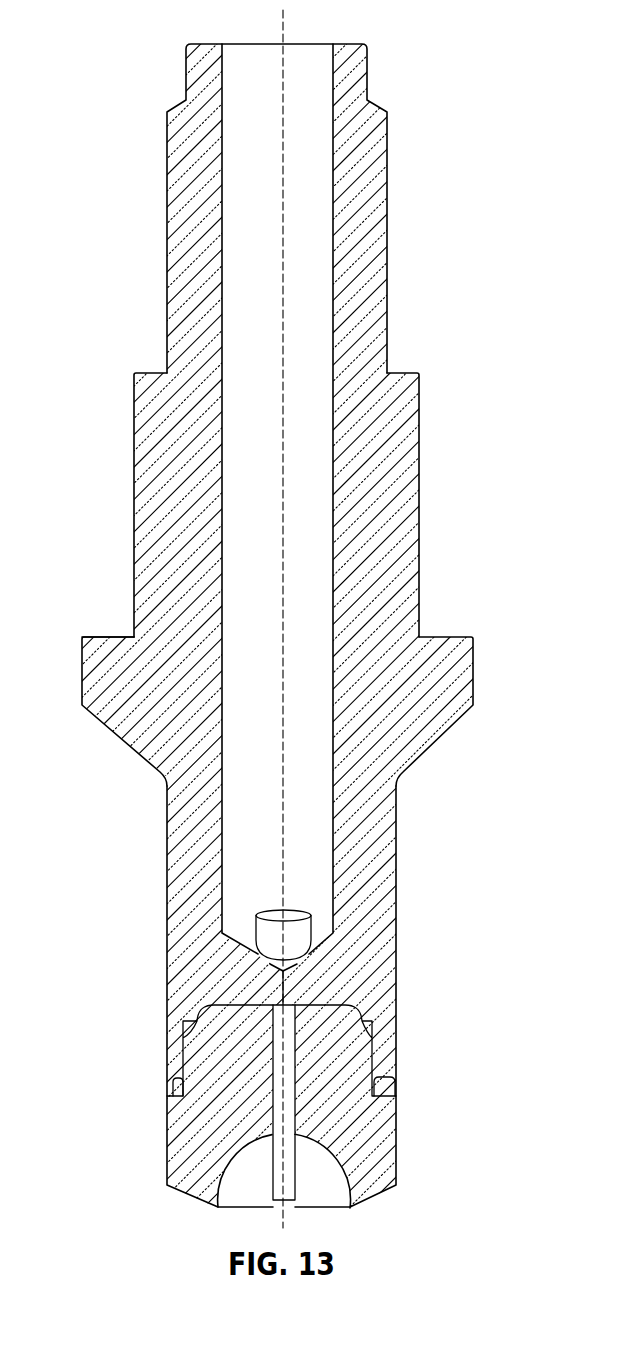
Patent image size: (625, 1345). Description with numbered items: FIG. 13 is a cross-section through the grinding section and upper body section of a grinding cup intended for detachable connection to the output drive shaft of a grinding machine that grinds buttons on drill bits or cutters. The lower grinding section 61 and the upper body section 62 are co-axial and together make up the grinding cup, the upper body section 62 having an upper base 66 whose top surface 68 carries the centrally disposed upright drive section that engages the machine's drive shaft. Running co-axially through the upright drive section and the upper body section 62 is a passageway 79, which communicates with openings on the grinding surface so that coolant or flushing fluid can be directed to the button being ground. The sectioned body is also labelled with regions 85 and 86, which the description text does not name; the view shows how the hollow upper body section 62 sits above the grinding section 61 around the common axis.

The grinding section 61 is at (388, 1142).
The upper body section 62 is at (390, 875).
The upper base 66 is at (458, 673).
The top surface 68 is at (108, 637).
The passageway 79 is at (245, 271).
The intermediate section 85 is at (408, 510).
The upper section 86 is at (376, 250).